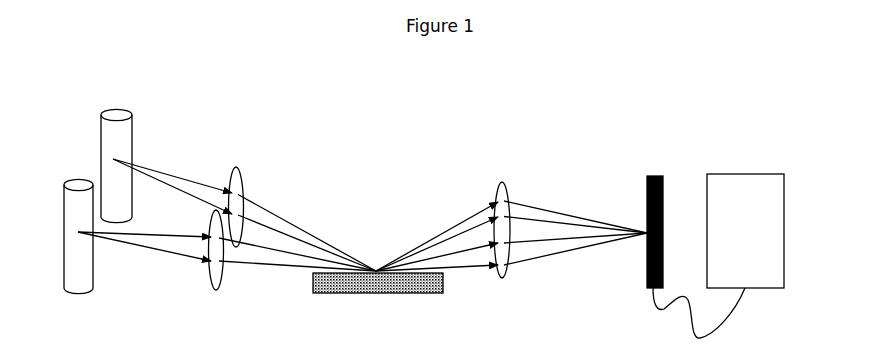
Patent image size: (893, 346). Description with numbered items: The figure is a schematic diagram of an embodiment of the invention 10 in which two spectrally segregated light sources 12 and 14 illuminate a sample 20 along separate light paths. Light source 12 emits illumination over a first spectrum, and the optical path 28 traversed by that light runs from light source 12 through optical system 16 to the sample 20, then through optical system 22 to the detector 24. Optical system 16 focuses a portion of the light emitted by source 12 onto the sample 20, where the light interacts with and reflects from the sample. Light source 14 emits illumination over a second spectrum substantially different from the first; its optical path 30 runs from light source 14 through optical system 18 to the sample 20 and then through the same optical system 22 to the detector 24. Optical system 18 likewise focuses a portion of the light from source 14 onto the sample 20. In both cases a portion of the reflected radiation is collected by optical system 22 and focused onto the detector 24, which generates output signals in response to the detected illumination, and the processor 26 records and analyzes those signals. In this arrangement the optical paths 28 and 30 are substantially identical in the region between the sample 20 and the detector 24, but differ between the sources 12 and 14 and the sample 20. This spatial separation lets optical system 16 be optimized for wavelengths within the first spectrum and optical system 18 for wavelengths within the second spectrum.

The embodiment of the invention 10 is at (424, 86).
The light source 12 is at (107, 153).
The light source 14 is at (78, 249).
The optical system 16 is at (238, 195).
The optical system 18 is at (215, 265).
The sample 20 is at (378, 295).
The optical system 22 is at (502, 219).
The detector 24 is at (696, 243).
The processor 26 is at (745, 217).
The optical path 28 is at (380, 213).
The optical path 30 is at (362, 260).